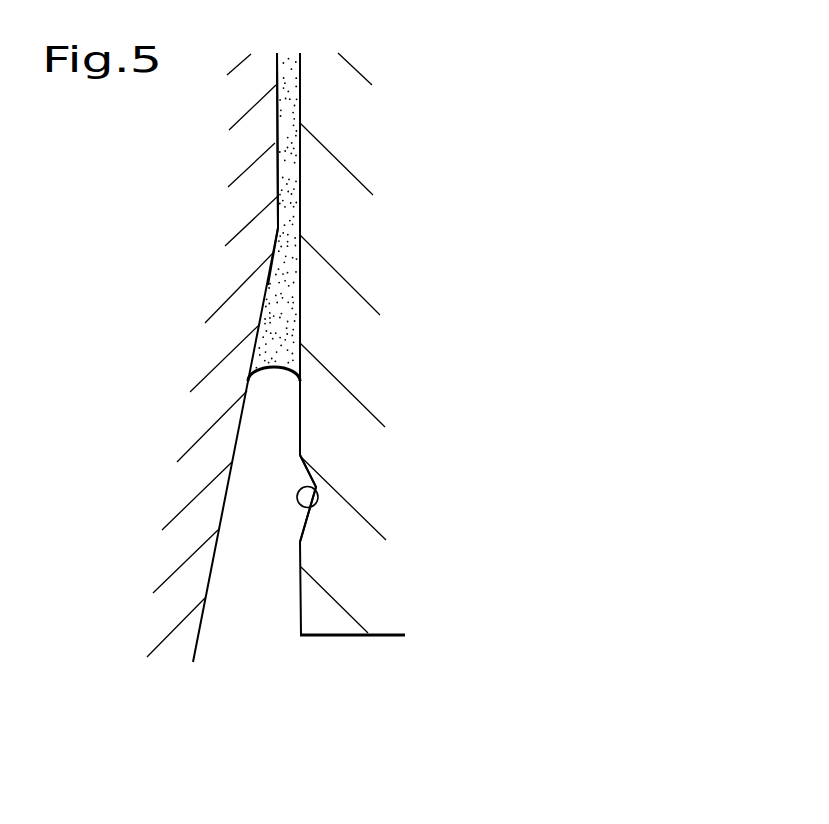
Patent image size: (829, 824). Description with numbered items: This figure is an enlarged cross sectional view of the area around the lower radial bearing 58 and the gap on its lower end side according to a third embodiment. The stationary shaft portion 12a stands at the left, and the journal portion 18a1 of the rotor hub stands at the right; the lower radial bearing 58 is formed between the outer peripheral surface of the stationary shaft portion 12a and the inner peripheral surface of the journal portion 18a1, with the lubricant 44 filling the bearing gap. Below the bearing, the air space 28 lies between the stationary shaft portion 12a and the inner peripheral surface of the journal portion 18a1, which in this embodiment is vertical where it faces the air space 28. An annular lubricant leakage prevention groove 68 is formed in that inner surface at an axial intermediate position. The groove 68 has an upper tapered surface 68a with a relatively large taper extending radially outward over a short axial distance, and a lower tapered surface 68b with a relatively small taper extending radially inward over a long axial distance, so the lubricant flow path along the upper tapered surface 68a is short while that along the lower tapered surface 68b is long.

The stationary shaft portion 12a is at (227, 333).
The air space 28 is at (248, 568).
The lubricant 44 is at (290, 307).
The lower radial bearing 58 is at (290, 123).
The journal portion 18a1 is at (362, 557).
The lubricant leakage prevention groove 68 is at (317, 484).
The upper tapered surface 68a is at (309, 483).
The lower tapered surface 68b is at (303, 523).